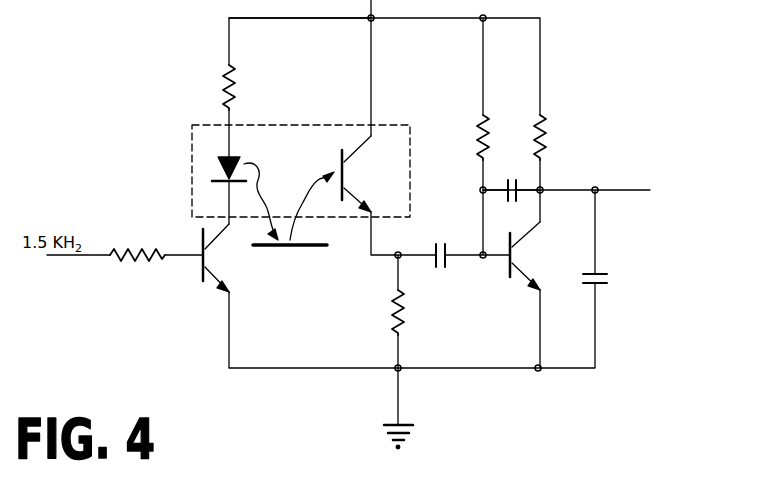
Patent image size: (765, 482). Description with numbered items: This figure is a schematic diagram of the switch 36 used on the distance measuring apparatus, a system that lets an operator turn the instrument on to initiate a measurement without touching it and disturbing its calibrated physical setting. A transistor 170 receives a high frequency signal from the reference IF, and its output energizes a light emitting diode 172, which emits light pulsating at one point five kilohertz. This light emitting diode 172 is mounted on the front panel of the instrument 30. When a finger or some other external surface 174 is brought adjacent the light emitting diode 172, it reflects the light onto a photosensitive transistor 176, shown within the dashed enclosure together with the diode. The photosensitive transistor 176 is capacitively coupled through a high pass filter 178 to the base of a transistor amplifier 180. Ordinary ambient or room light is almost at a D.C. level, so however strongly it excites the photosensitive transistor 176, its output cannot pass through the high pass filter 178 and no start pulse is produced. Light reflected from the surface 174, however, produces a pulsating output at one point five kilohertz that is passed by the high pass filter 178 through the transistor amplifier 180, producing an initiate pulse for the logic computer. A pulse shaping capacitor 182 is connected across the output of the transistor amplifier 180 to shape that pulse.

The switch 36 is at (158, 95).
The instrument 30 is at (192, 157).
The light emitting diode 172 is at (236, 158).
The external surface 174 is at (260, 249).
The photosensitive transistor 176 is at (350, 154).
The transistor 170 is at (201, 269).
The high pass filter 178 is at (440, 246).
The transistor amplifier 180 is at (505, 266).
The pulse shaping capacitor 182 is at (601, 270).